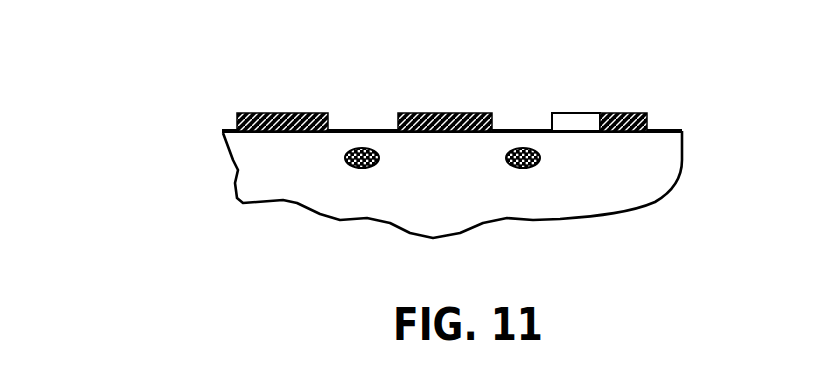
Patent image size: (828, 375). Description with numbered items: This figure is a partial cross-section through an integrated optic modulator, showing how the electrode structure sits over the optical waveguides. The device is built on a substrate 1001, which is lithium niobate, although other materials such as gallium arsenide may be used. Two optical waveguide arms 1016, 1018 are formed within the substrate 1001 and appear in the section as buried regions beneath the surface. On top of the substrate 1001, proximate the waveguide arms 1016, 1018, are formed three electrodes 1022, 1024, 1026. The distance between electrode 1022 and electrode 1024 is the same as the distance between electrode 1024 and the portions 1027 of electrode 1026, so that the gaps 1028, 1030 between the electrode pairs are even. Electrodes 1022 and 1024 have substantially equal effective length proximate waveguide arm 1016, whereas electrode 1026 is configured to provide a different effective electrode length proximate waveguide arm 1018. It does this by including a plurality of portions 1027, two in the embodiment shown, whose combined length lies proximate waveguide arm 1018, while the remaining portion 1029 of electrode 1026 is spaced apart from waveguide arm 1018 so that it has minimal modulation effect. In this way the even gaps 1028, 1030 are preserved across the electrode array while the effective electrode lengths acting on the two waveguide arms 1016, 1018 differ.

The substrate 1001 is at (253, 182).
The optical waveguide arm 1016 is at (522, 168).
The optical waveguide arm 1018 is at (363, 168).
The electrode 1022 is at (265, 122).
The electrode 1024 is at (415, 118).
The electrode 1026 is at (620, 114).
The portions of electrode 1027 is at (592, 115).
The gap 1028 is at (363, 113).
The remaining portion of electrode 1029 is at (608, 132).
The gap 1030 is at (503, 113).